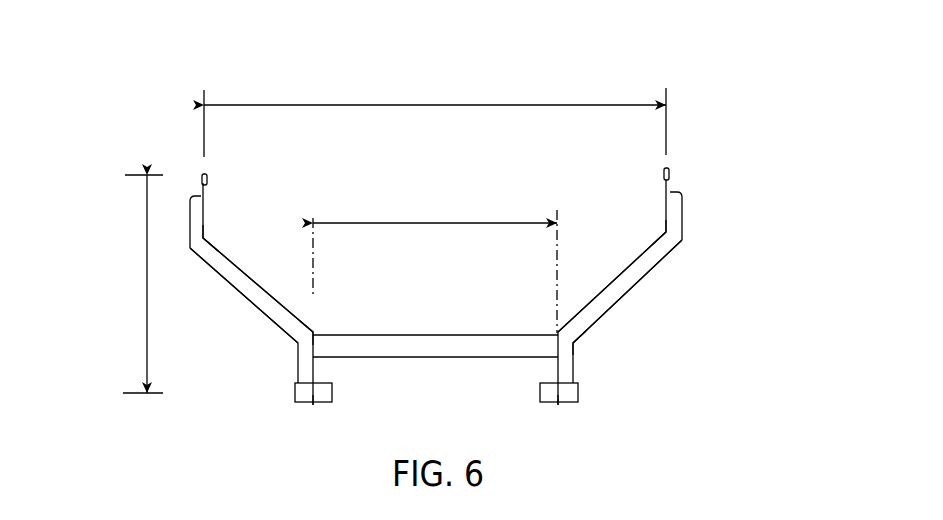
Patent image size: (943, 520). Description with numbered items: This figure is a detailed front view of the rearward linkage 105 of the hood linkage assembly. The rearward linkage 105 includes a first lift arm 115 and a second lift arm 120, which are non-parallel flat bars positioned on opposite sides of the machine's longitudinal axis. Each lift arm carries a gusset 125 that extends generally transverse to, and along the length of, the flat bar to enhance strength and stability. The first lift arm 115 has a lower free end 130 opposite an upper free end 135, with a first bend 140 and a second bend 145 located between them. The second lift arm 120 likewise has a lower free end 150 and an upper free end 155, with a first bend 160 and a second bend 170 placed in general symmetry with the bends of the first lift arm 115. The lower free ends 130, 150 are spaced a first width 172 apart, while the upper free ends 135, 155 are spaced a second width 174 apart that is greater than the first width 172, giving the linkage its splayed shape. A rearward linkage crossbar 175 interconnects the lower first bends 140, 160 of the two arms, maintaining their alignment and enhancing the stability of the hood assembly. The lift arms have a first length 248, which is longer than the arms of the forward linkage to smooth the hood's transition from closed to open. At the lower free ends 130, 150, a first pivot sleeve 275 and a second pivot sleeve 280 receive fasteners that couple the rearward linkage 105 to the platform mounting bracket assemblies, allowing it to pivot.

The rearward linkage 105 is at (93, 83).
The first lift arm 115 is at (175, 227).
The second lift arm 120 is at (707, 213).
The gusset 125 is at (238, 282).
The lower free end 130 is at (283, 397).
The upper free end 135 is at (212, 175).
The first bend 140 is at (315, 327).
The second bend 145 is at (215, 238).
The lower free end 150 is at (593, 386).
The upper free end 155 is at (670, 162).
The first bend 160 is at (582, 343).
The second bend 170 is at (658, 230).
The first width 172 is at (415, 223).
The second width 174 is at (488, 106).
The rearward linkage crossbar 175 is at (433, 335).
The first length 248 is at (147, 297).
The first pivot sleeve 275 is at (325, 402).
The second pivot sleeve 280 is at (542, 402).